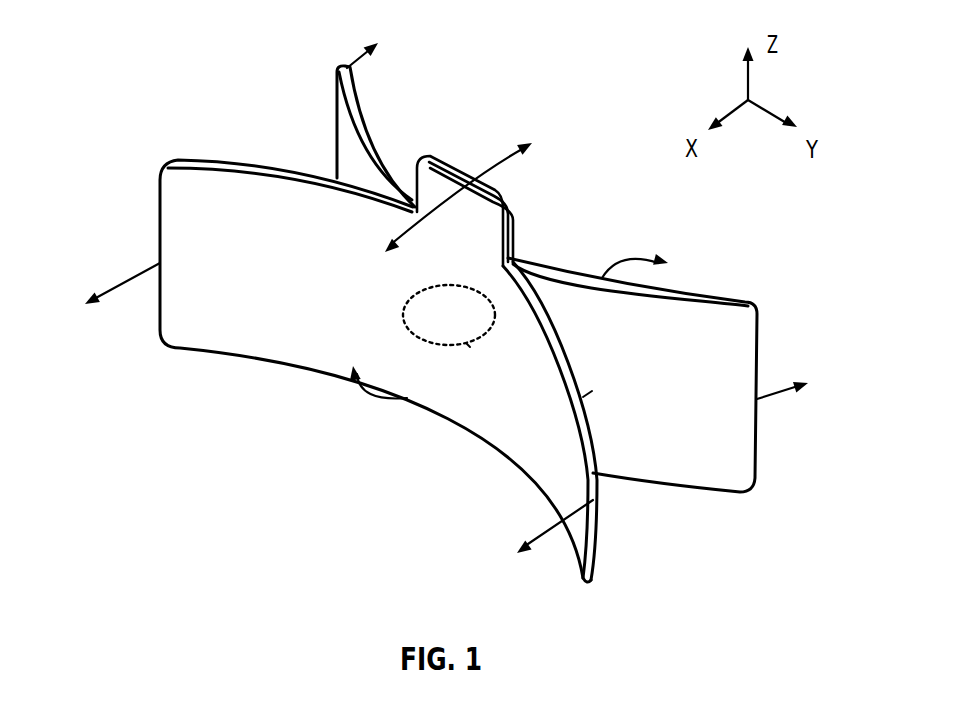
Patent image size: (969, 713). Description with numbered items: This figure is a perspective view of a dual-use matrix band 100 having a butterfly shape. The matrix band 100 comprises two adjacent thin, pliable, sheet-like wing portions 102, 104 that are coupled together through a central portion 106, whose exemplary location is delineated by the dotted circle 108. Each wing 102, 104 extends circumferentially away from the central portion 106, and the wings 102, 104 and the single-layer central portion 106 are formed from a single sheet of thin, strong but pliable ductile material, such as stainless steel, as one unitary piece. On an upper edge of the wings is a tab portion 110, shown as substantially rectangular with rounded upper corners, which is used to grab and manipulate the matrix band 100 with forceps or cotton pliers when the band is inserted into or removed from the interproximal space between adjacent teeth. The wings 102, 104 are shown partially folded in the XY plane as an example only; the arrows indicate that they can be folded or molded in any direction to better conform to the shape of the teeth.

The dual-use matrix band 100 is at (603, 92).
The wing portion 102 is at (512, 403).
The wing portion 104 is at (692, 418).
The central portion 106 is at (440, 314).
The dotted circle 108 is at (468, 345).
The tab portion 110 is at (470, 216).